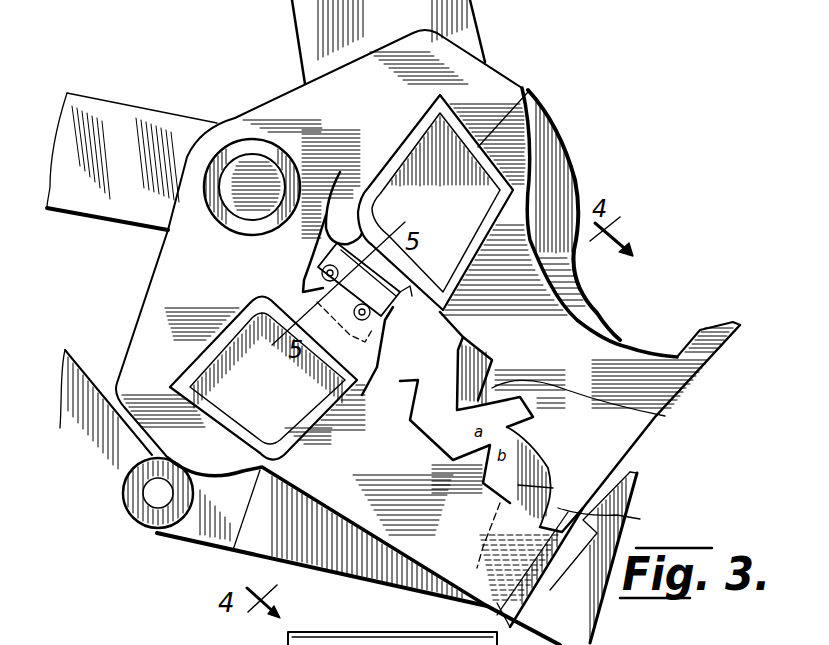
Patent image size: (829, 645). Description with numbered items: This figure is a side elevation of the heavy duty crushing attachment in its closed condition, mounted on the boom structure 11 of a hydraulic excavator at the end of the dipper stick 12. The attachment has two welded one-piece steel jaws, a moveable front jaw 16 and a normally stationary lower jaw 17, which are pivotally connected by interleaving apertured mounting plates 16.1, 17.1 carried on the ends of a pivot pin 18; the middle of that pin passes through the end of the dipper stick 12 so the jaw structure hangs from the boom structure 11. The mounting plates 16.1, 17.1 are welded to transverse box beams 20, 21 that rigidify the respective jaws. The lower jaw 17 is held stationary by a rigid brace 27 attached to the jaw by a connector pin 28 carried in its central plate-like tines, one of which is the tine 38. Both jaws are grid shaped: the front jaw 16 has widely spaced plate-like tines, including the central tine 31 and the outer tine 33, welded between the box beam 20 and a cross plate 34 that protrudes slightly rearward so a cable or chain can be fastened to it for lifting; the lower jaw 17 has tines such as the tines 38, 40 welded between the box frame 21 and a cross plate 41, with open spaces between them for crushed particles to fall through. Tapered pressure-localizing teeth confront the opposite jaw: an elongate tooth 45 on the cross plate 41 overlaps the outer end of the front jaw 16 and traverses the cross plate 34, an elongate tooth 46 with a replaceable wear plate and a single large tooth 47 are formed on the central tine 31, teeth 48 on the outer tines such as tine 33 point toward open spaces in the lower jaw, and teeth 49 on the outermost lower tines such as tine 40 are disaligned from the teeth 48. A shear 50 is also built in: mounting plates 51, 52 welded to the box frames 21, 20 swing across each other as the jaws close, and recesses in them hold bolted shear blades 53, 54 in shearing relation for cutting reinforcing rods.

The boom structure 11 is at (113, 228).
The dipper stick 12 is at (125, 127).
The front jaw 16 is at (692, 389).
The mounting plate 16.1 is at (282, 97).
The lower jaw 17 is at (153, 537).
The mounting plate 17.1 is at (160, 313).
The pivot pin 18 is at (247, 173).
The jaw box beam 20 is at (547, 93).
The jaw box frame 21 is at (233, 552).
The brace 27 is at (100, 452).
The connector pin 28 is at (160, 493).
The central plate-like tine 31 is at (583, 298).
The plate-like tine 33 is at (637, 367).
The cross plate 34 is at (708, 340).
The plate-like tine 38 is at (370, 568).
The plate-like tine 40 is at (450, 562).
The cross plate 41 is at (513, 610).
The elongate tapered tooth 45 is at (607, 512).
The elongate tapered tooth 46 is at (560, 497).
The tapered tooth 47 is at (458, 371).
The tapered teeth 48 is at (664, 416).
The tapered teeth 49 is at (413, 400).
The shear 50 is at (300, 284).
The mounting plate 51 is at (377, 370).
The mounting plate 52 is at (405, 323).
The shear blade 53 is at (335, 245).
The shear blade 54 is at (420, 287).